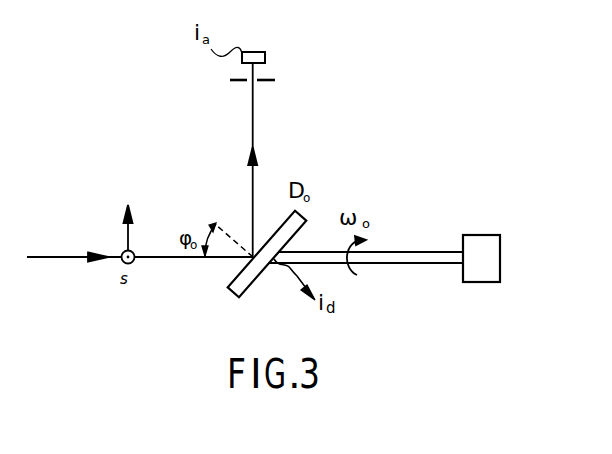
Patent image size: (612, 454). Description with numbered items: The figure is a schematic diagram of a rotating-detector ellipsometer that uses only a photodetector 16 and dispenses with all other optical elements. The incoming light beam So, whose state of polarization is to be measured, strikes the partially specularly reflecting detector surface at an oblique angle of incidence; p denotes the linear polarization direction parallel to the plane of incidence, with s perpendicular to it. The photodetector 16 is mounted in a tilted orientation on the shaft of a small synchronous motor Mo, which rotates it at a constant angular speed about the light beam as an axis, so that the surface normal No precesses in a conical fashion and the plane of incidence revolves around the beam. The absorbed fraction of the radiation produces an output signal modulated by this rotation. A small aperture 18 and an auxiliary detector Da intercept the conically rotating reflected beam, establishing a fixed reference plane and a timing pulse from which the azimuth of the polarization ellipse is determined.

The photodetector 16 is at (249, 287).
The aperture 18 is at (256, 83).
The light beam So is at (140, 247).
The polarization direction parallel to the plane of incidence p is at (129, 222).
The auxiliary detector Da is at (255, 39).
The surface normal No is at (226, 218).
The synchronous motor Mo is at (500, 258).